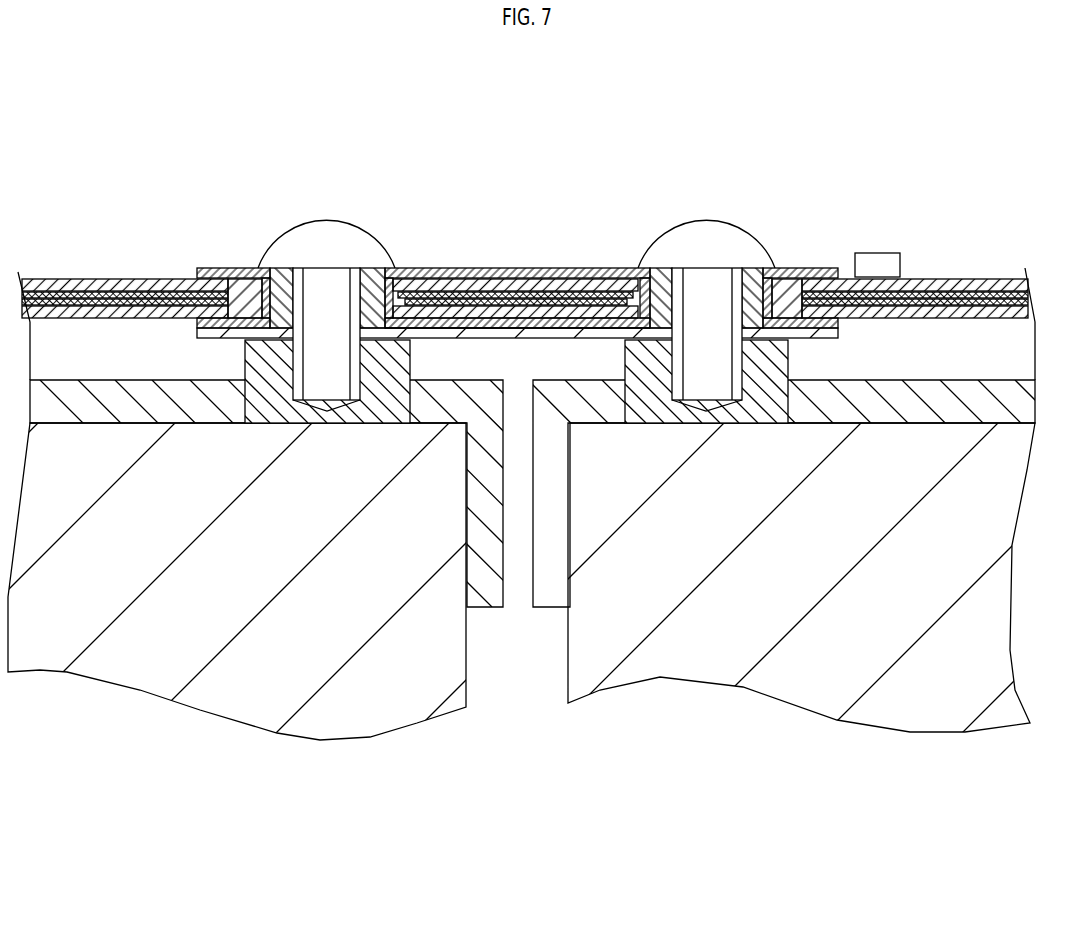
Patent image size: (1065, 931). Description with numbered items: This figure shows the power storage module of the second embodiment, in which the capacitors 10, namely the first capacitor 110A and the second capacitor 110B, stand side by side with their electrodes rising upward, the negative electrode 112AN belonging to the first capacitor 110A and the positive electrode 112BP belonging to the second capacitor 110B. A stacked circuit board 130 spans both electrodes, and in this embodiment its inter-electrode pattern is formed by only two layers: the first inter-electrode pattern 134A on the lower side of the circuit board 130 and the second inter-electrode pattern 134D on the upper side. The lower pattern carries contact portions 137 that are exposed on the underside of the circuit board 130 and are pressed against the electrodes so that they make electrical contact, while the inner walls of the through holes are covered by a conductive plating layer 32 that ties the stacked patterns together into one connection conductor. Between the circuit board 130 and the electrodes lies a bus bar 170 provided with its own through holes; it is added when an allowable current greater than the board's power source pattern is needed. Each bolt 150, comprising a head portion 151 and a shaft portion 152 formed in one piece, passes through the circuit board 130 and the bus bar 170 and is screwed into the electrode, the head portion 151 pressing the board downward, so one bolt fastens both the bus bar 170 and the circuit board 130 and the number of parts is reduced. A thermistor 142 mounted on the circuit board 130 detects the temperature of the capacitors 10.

The capacitors 10 is at (532, 645).
The first capacitor 110A is at (361, 645).
The second capacitor 110B is at (466, 702).
The negative electrode 112AN is at (245, 367).
The positive electrode 112BP is at (788, 355).
The circuit board 130 is at (611, 225).
The first inter-electrode pattern 134A is at (441, 268).
The second inter-electrode pattern 134D is at (493, 342).
The contact portions 137 is at (393, 334).
The thermistor 142 is at (877, 253).
The bolt 150 is at (502, 269).
The head portion 151 is at (502, 295).
The shaft portion 152 is at (310, 286).
The plating layer 32 is at (367, 300).
The bus bar 170 is at (533, 340).